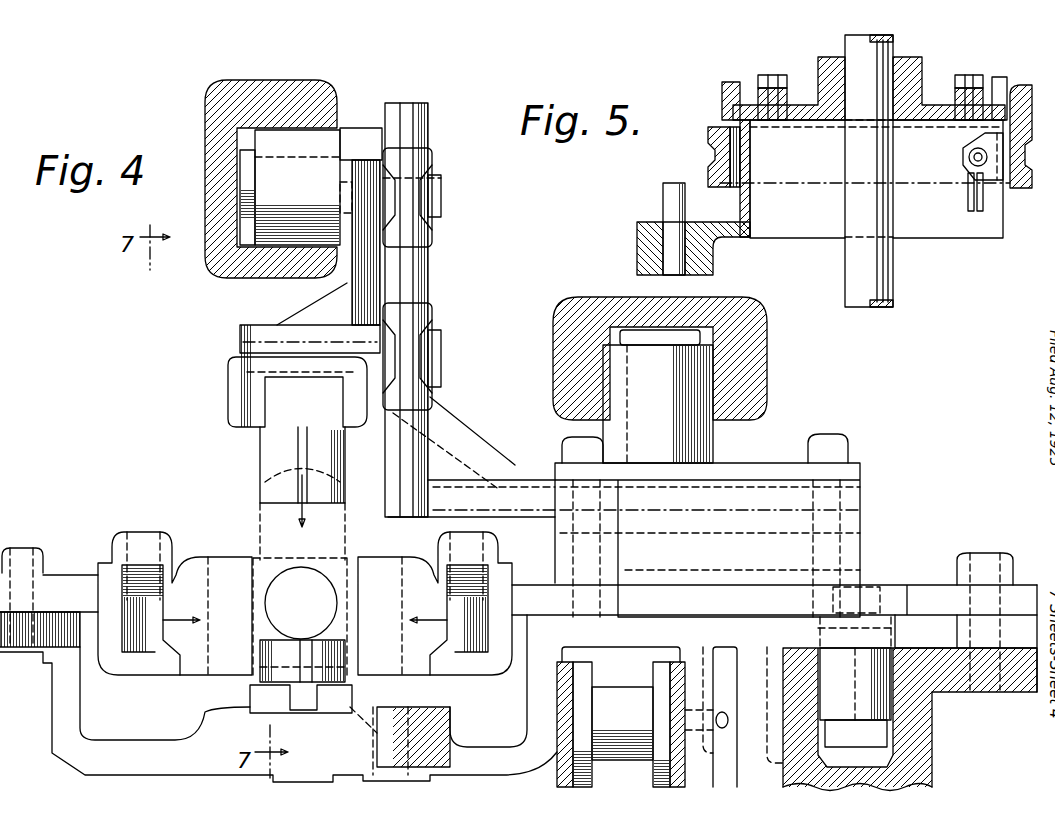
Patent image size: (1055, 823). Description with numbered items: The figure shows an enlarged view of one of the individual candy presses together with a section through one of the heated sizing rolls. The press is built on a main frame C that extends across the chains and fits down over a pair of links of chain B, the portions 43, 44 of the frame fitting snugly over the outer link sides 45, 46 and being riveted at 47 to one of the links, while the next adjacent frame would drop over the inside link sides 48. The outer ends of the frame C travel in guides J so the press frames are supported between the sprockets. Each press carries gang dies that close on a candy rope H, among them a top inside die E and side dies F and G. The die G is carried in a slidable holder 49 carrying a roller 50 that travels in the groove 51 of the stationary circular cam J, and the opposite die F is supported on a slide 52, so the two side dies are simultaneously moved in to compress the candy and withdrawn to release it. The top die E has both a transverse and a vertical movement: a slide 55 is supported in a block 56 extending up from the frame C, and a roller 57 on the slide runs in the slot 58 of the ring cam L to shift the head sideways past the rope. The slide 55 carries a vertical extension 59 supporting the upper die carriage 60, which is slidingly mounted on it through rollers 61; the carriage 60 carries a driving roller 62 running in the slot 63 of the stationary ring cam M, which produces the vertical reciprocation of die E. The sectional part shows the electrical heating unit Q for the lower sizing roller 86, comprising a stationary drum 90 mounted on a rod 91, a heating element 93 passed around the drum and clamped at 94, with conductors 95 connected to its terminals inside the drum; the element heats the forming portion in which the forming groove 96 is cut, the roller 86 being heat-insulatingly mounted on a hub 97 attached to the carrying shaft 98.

In FIG. 4, the frame portion 43 is at (540, 747).
In FIG. 4, the frame portion 44 is at (700, 750).
In FIG. 4, the outer link side 45 is at (557, 765).
In FIG. 4, the outer link side 46 is at (688, 675).
In FIG. 4, the rivet 47 is at (728, 716).
In FIG. 4, the inside link sides 48 is at (655, 775).
In FIG. 4, the slidable holder 49 is at (533, 595).
In FIG. 4, the roller 50 is at (895, 700).
In FIG. 4, the groove 51 is at (877, 747).
In FIG. 4, the slide 52 is at (67, 600).
In FIG. 4, the slide 55 is at (513, 493).
In FIG. 4, the block 56 is at (830, 495).
In FIG. 4, the roller 57 is at (630, 385).
In FIG. 4, the slot 58 is at (647, 377).
In FIG. 4, the vertical extension 59 is at (429, 310).
In FIG. 4, the upper die carriage 60 is at (360, 297).
In FIG. 4, the rollers 61 is at (407, 170).
In FIG. 4, the driving roller 62 is at (310, 143).
In FIG. 4, the slot 63 is at (230, 262).
In FIG. 5, the lower sizing roller 86 is at (1020, 127).
In FIG. 5, the stationary drum 90 is at (816, 197).
In FIG. 5, the rod 91 is at (675, 203).
In FIG. 5, the heating element 93 is at (720, 143).
In FIG. 5, the clamp 94 is at (967, 153).
In FIG. 5, the conductors 95 is at (970, 212).
In FIG. 5, the forming groove 96 is at (720, 155).
In FIG. 5, the hub 97 is at (920, 80).
In FIG. 5, the carrying shaft 98 is at (893, 298).
In FIG. 4, the stationary ring cam M is at (268, 167).
In FIG. 4, the top inside die E is at (277, 452).
In FIG. 4, the side die F is at (225, 555).
In FIG. 4, the candy rope H is at (283, 590).
In FIG. 4, the side die G is at (375, 575).
In FIG. 4, the chain B is at (641, 722).
In FIG. 4, the main frame C is at (907, 687).
In FIG. 4, the stationary circular cam J is at (963, 617).
In FIG. 4, the ring cam L is at (658, 377).
In FIG. 5, the electrical heating unit Q is at (803, 165).